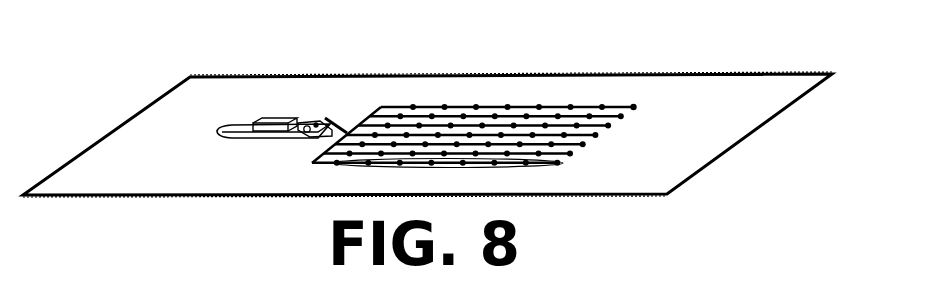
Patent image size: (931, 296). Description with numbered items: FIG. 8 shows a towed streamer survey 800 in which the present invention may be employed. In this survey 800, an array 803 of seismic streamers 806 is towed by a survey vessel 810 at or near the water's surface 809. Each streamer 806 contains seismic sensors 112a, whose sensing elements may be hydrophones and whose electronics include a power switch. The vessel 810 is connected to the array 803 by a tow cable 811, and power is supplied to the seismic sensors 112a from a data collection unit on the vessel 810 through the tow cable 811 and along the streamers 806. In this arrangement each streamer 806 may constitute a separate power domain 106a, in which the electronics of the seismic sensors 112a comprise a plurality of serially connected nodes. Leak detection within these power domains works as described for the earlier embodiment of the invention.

The survey 800 is at (100, 43).
The water's surface 809 is at (815, 73).
The survey vessel 810 is at (240, 122).
The tow cable 811 is at (336, 120).
The array 803 is at (380, 108).
The seismic sensor 112a is at (420, 107).
The seismic streamer 806 is at (626, 104).
The power domain 106a is at (554, 165).